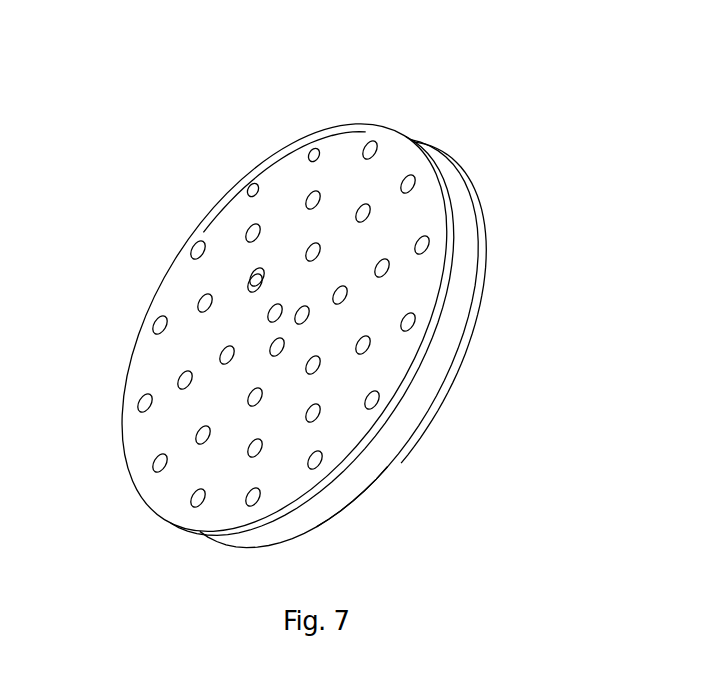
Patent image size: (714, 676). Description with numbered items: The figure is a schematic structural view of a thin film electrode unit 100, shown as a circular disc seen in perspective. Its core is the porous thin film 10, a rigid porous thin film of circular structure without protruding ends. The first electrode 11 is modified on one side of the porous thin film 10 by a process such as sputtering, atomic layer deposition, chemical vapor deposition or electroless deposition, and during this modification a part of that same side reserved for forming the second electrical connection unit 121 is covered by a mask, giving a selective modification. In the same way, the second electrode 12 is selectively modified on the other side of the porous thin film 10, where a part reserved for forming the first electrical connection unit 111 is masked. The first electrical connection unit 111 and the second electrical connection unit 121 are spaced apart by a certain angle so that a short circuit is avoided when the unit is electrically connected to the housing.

The filter assembly 100 is at (108, 41).
The porous thin film 10 is at (468, 238).
The first electrode 11 is at (468, 347).
The second electrode 12 is at (422, 142).
The first electrical connection unit 111 is at (313, 133).
The second electrical connection unit 121 is at (343, 508).